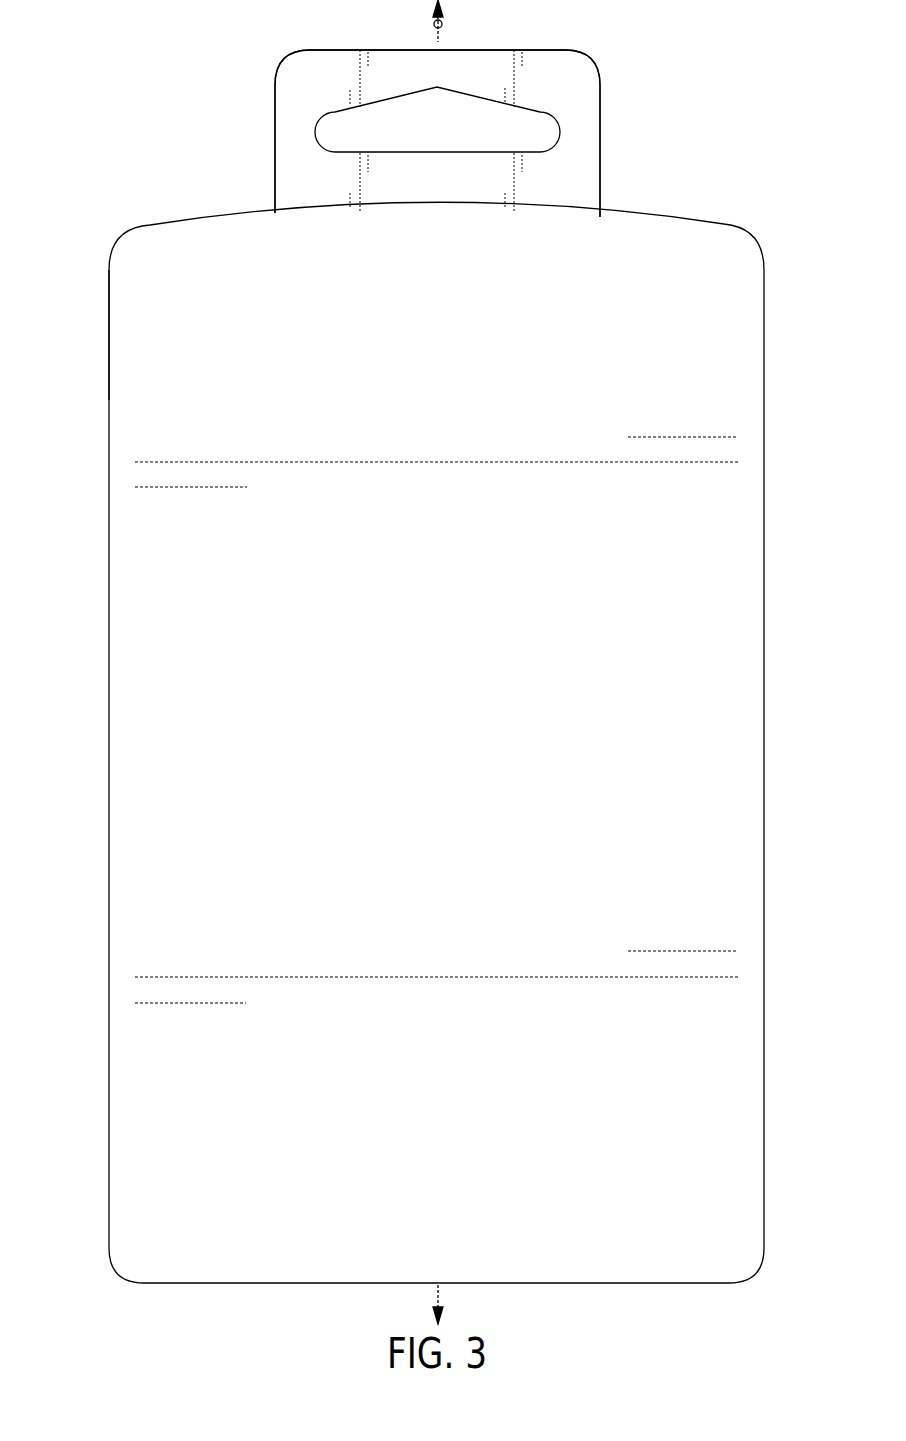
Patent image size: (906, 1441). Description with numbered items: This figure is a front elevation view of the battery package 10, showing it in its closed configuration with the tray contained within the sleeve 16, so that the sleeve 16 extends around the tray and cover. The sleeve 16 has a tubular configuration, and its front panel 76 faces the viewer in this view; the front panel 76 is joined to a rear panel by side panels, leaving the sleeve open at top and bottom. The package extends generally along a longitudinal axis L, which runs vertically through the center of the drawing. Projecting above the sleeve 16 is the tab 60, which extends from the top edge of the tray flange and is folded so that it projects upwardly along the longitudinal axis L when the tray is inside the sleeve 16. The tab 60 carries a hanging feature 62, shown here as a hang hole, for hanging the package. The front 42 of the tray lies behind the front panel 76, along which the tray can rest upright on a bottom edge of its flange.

The battery package 10 is at (688, 133).
The sleeve 16 is at (119, 441).
The front 42 is at (128, 1119).
The tab 60 is at (287, 89).
The hanging feature 62 is at (468, 97).
The front panel 76 is at (119, 309).
The longitudinal axis L is at (445, 25).